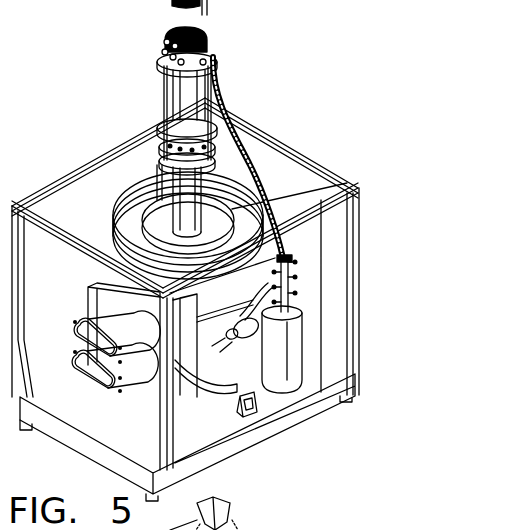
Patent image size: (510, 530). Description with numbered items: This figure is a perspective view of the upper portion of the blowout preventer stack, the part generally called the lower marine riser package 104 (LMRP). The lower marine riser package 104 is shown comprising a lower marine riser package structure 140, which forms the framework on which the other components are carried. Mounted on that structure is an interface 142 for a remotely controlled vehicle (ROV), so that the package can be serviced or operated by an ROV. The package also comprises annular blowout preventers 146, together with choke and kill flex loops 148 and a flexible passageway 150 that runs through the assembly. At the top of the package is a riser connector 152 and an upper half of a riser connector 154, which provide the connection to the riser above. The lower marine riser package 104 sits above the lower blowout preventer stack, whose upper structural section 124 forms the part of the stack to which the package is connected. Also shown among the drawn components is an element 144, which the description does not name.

The pump system 104 is at (303, 93).
The discharge nozzle 124 is at (297, 529).
The base 140 is at (237, 443).
The mounting bracket 142 is at (258, 409).
The canister 144 is at (286, 331).
The sensor 146 is at (262, 280).
The frame 148 is at (357, 185).
The hose coil 150 is at (262, 169).
The pump 152 is at (222, 139).
The motor 154 is at (213, 52).